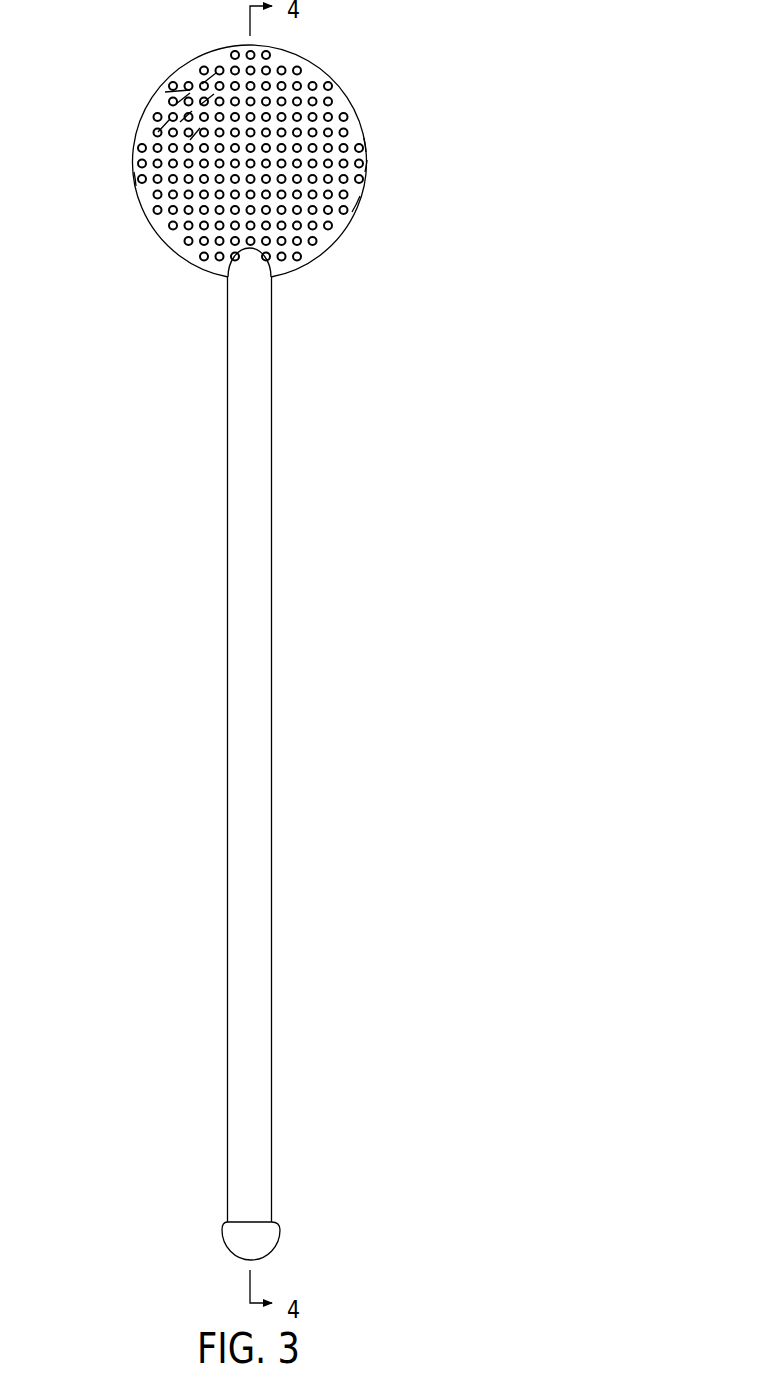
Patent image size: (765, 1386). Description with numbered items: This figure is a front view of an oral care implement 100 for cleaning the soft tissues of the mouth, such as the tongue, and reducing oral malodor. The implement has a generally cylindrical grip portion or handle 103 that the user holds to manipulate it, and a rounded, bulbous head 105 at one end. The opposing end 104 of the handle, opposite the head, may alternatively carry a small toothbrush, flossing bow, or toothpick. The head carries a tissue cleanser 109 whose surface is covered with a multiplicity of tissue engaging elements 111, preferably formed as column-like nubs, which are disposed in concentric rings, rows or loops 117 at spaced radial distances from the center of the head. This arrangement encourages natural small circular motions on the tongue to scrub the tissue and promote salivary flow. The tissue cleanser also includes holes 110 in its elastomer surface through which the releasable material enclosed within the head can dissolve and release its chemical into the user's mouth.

The oral care implement 100 is at (311, 635).
The handle 103 is at (272, 748).
The opposing end 104 is at (280, 1238).
The head 105 is at (247, 143).
The tissue cleanser 109 is at (357, 204).
The holes 110 is at (247, 83).
The tissue engaging elements 111 is at (364, 146).
The loops 117 is at (203, 100).